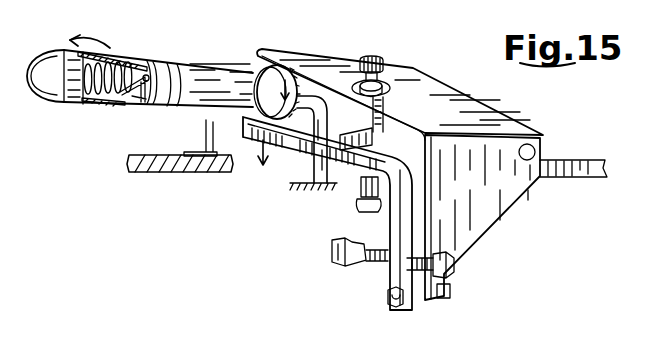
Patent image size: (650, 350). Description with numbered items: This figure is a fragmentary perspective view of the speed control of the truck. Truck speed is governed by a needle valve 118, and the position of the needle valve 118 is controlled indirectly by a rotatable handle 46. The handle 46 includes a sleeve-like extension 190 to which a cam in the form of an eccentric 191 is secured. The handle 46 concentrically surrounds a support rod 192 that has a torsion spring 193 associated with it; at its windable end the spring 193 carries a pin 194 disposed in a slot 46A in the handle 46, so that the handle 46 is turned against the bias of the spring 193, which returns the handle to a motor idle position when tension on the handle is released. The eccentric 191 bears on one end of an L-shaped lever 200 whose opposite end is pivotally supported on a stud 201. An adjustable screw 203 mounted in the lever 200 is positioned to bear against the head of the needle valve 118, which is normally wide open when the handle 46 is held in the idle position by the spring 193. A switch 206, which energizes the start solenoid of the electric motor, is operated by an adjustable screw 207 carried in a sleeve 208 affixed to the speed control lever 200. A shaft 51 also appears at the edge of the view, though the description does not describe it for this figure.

The handle 46 is at (150, 68).
The slot 46A is at (148, 102).
The shaft 51 is at (649, 338).
The needle valve 118 is at (337, 262).
The sleeve-like extension 190 is at (248, 75).
The eccentric cam 191 is at (284, 78).
The support rod 192 is at (310, 97).
The torsion spring 193 is at (113, 75).
The pin 194 is at (150, 80).
The L-shaped lever 200 is at (298, 148).
The stud 201 is at (387, 297).
The adjustable screw 203 is at (452, 263).
The switch 206 is at (355, 200).
The adjustable screw 207 is at (383, 68).
The sleeve 208 is at (383, 118).